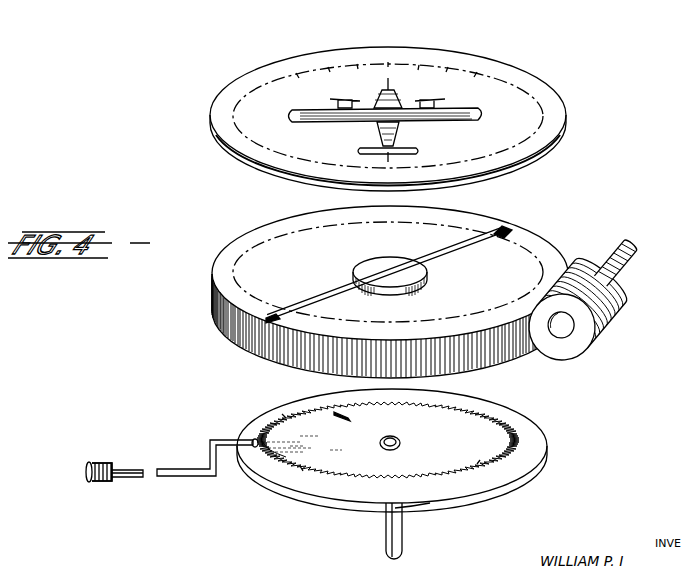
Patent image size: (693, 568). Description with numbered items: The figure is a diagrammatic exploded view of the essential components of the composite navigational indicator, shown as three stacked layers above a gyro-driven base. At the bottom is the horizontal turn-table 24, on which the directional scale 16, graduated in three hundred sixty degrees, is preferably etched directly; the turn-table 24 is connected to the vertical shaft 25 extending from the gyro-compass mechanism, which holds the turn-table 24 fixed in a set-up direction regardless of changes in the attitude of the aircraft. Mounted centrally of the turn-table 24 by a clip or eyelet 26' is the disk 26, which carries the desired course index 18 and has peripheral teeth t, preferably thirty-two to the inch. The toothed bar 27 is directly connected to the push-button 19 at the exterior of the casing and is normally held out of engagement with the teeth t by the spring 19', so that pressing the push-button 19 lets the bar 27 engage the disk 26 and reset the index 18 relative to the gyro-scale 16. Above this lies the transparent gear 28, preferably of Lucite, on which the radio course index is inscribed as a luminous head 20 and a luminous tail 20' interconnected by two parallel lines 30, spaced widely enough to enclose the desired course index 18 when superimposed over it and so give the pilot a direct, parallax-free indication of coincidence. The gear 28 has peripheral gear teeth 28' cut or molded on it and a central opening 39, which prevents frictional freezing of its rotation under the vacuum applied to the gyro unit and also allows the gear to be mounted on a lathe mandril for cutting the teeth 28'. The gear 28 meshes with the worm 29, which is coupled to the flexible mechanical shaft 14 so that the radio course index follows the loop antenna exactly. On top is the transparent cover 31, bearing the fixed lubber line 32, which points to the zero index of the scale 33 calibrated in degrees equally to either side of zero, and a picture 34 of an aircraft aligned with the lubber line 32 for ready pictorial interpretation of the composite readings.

The flexible mechanical cable 14 is at (618, 246).
The directional scale 16 is at (526, 420).
The desired course index 18 is at (334, 410).
The push-button 19 is at (108, 471).
The spring 19' is at (106, 449).
The luminous head of radio course index 20 is at (519, 218).
The luminous tail of radio course index 20' is at (283, 297).
The turn-table 24 is at (428, 506).
The vertical shaft 25 is at (384, 530).
The disk 26 is at (388, 426).
The clip or eyelet 26' is at (420, 449).
The toothed bar 27 is at (213, 440).
The transparent gear 28 is at (370, 288).
The gear teeth 28' is at (370, 325).
The worm 29 is at (585, 330).
The parallel lines 30 is at (448, 250).
The transparent cover 31 is at (512, 92).
The lubber line 32 is at (387, 78).
The scale 33 is at (460, 60).
The picture of an aircraft 34 is at (340, 118).
The central hole or opening 39 is at (379, 259).
The teeth t is at (282, 414).